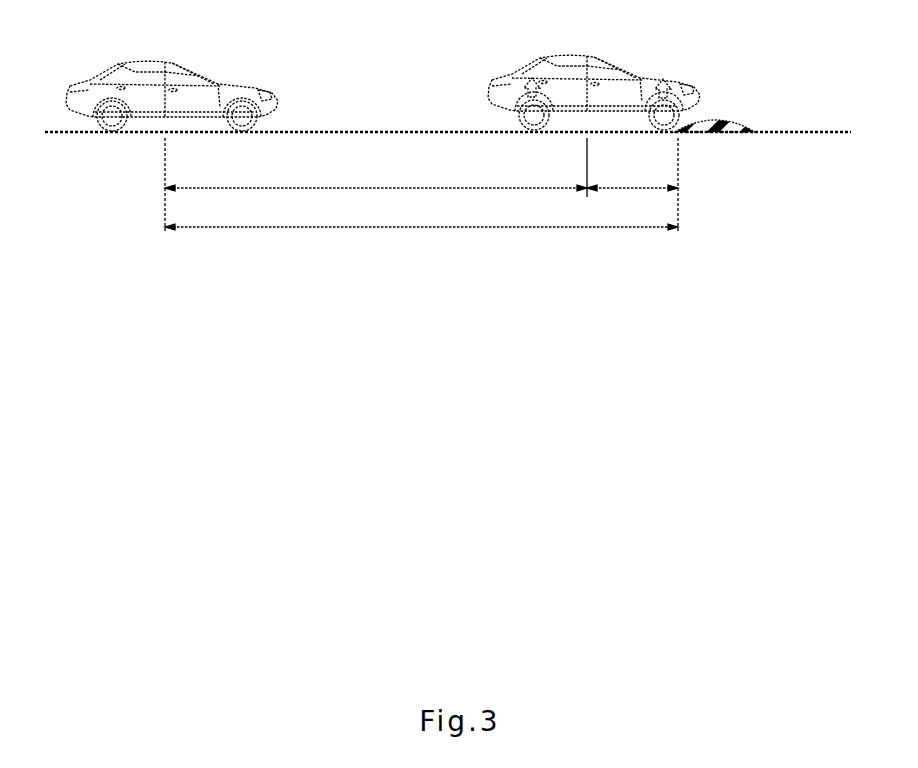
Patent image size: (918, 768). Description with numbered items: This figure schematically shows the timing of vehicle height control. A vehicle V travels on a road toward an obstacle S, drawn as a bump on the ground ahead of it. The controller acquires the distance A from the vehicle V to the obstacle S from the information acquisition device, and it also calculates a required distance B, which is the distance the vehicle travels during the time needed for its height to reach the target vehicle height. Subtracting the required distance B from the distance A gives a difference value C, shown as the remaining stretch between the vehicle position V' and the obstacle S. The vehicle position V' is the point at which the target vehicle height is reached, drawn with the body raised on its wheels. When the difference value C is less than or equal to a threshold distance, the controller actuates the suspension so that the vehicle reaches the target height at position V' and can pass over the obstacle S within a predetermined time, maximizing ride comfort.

The vehicle V is at (172, 81).
The vehicle position at the time when the target vehicle height is reached V' is at (594, 76).
The obstacle S is at (719, 119).
The distance to obstacle A is at (421, 216).
The required distance B is at (376, 177).
The difference value C is at (632, 177).